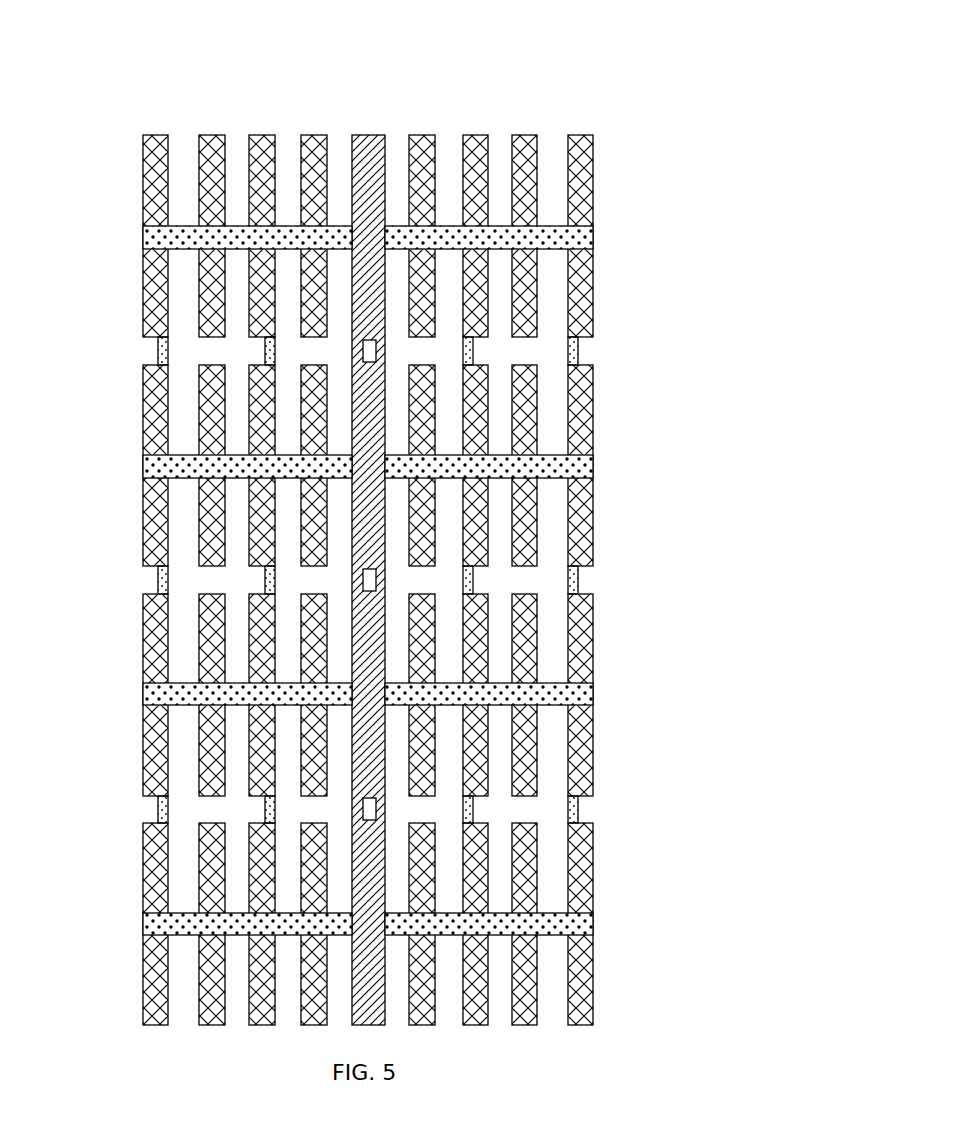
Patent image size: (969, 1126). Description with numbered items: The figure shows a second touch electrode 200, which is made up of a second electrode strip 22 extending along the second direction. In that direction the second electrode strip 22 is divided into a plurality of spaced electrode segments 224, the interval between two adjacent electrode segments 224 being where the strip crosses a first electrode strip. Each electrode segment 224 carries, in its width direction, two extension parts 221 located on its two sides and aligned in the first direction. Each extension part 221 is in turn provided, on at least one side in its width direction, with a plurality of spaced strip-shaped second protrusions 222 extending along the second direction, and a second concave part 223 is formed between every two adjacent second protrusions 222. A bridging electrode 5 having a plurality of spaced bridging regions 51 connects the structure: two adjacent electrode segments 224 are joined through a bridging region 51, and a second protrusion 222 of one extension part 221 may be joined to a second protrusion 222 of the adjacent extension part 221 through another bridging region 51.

The second touch electrode 200 is at (412, 537).
The second electrode strip 22 is at (423, 555).
The extension part 221 is at (145, 242).
The second protrusion 222 is at (260, 132).
The second concave part 223 is at (185, 170).
The electrode segment 224 is at (360, 150).
The bridging electrode 5 is at (448, 580).
The bridging region 51 is at (383, 352).